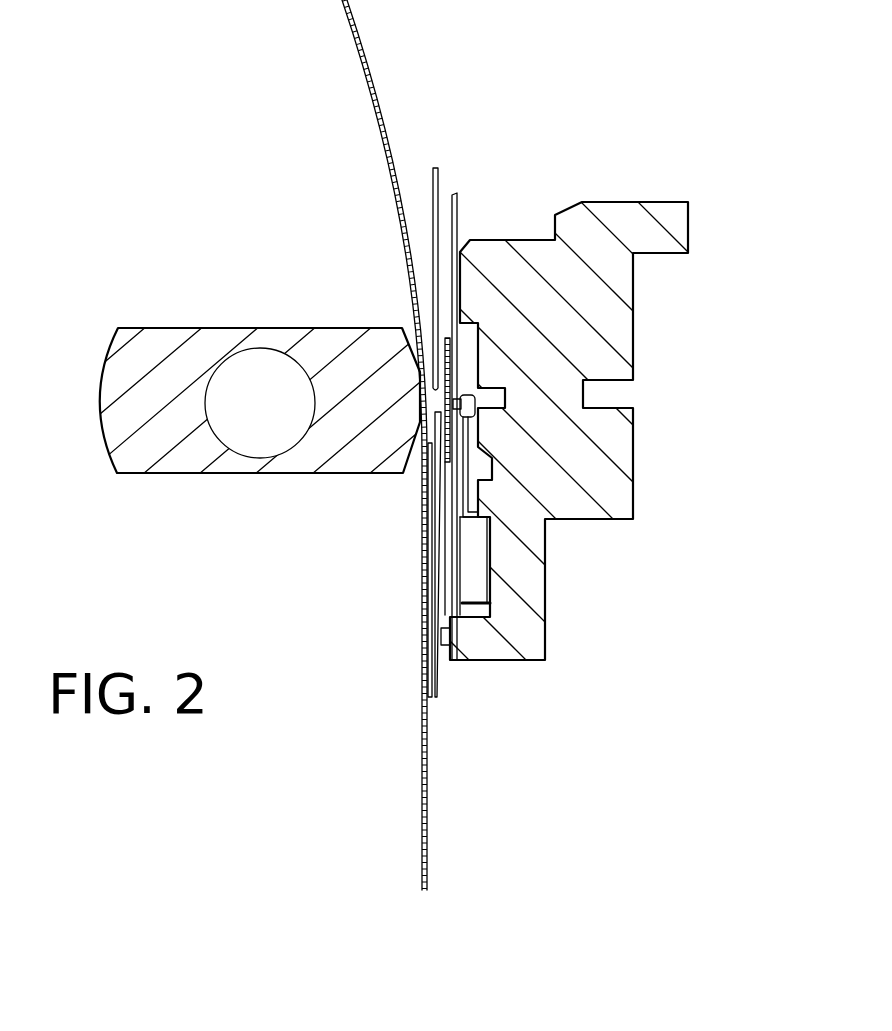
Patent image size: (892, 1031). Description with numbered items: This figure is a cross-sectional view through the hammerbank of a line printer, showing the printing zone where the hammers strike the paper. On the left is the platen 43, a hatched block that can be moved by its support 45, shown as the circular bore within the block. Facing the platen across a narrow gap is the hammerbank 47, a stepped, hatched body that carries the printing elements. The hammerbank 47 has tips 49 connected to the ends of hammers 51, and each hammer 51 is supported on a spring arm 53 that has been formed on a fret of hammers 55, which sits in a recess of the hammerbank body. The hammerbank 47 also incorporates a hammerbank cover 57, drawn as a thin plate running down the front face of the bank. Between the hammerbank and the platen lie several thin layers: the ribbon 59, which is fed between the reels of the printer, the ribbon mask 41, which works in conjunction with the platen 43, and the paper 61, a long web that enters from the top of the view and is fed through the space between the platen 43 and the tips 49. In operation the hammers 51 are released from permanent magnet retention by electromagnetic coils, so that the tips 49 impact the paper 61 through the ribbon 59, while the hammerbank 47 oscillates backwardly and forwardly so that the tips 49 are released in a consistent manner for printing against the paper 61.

The ribbon mask 41 is at (428, 168).
The platen 43 is at (120, 330).
The support 45 is at (258, 437).
The hammerbank 47 is at (630, 203).
The tips 49 is at (452, 388).
The hammers 51 is at (470, 430).
The spring arm 53 is at (467, 492).
The fret of hammers 55 is at (478, 582).
The hammerbank cover 57 is at (461, 192).
The ribbon 59 is at (450, 328).
The paper 61 is at (361, 47).